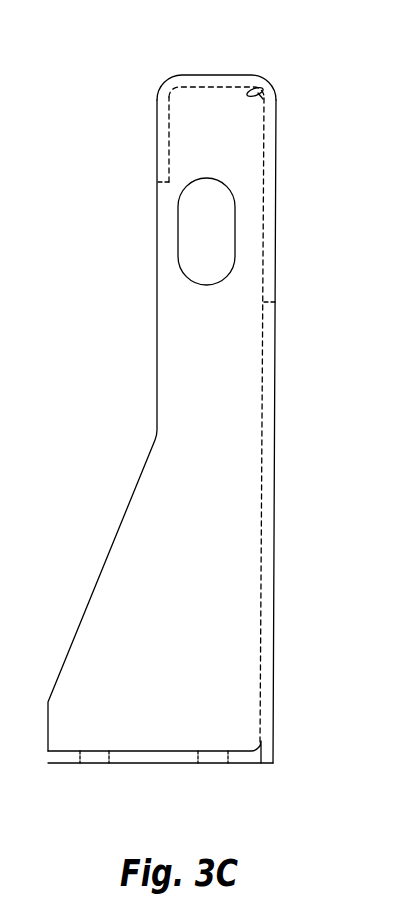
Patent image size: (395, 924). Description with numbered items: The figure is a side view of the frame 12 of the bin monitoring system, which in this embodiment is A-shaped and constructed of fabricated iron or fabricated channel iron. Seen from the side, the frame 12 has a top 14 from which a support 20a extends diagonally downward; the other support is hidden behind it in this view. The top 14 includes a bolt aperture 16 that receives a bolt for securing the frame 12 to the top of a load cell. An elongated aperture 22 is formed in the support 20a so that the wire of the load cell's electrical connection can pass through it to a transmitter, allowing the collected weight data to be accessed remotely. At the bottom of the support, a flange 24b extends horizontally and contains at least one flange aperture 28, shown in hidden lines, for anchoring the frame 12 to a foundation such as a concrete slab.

The frame 12 is at (146, 130).
The top 14 is at (263, 79).
The bolt aperture 16 is at (232, 83).
The support 20a is at (157, 301).
The aperture 22 is at (226, 218).
The flange 24b is at (145, 764).
The flange aperture 28 is at (87, 764).